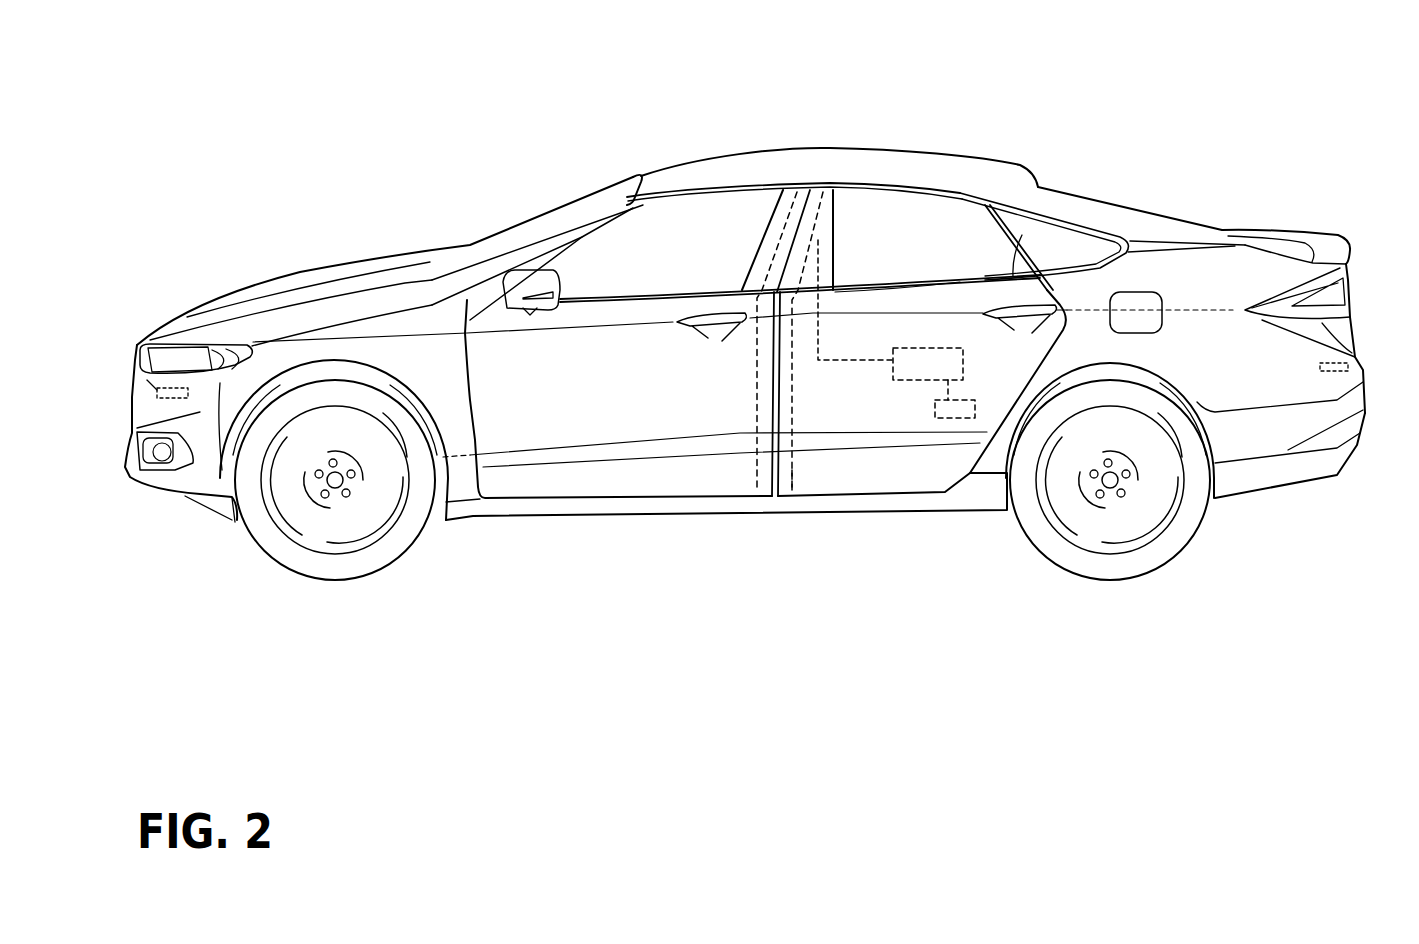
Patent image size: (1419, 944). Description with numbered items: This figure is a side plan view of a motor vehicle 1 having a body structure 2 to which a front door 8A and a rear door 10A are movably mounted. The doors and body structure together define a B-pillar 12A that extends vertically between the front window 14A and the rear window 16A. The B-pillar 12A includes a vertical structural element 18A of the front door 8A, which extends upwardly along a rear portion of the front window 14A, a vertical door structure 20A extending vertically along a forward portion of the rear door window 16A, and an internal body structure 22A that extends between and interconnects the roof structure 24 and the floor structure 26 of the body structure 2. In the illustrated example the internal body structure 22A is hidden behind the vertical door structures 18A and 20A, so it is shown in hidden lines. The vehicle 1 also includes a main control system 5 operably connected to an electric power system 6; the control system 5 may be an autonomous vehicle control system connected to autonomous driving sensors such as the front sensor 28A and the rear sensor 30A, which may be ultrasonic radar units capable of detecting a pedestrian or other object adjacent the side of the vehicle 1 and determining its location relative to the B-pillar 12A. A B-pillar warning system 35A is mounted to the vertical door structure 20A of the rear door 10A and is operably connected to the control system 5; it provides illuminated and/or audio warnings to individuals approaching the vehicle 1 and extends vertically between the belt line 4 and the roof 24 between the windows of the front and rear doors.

The motor vehicle 1 is at (1016, 153).
The body structure 2 is at (923, 150).
The belt line 4 is at (984, 271).
The main control system 5 is at (915, 386).
The electric power system 6 is at (954, 427).
The front door 8A is at (587, 482).
The rear door 10A is at (835, 472).
The B-pillar 12A is at (820, 172).
The front window 14A is at (672, 259).
The rear window 16A is at (926, 256).
The vertical structural element 18A is at (787, 217).
The vertical door structure 20A is at (823, 233).
The internal body structure 22A is at (752, 476).
The roof structure 24 is at (680, 180).
The floor structure 26 is at (652, 513).
The front sensor 28A is at (130, 367).
The rear sensor 30A is at (1362, 448).
The B-pillar warning system 35A is at (838, 198).